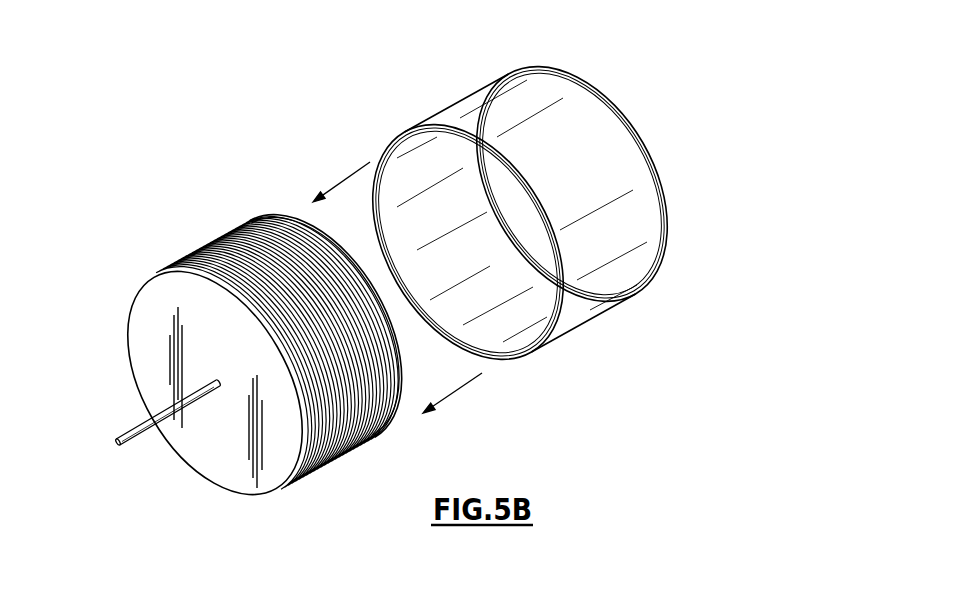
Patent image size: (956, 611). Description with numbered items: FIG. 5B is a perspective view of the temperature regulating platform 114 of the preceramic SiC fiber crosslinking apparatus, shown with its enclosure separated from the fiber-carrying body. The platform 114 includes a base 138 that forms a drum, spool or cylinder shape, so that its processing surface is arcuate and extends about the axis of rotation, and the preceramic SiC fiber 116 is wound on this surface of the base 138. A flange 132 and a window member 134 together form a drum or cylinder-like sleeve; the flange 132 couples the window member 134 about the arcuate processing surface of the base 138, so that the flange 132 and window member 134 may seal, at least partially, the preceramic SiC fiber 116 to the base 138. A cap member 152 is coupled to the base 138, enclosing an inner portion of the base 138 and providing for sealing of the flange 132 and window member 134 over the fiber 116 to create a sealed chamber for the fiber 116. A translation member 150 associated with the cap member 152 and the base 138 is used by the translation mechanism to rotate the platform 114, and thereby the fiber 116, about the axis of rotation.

The preceramic SiC fiber platform 114 is at (725, 128).
The preceramic SiC fiber 116 is at (228, 265).
The flange 132 is at (390, 137).
The window member 134 is at (472, 97).
The base 138 is at (258, 223).
The translation member 150 is at (116, 440).
The cap member 152 is at (140, 336).